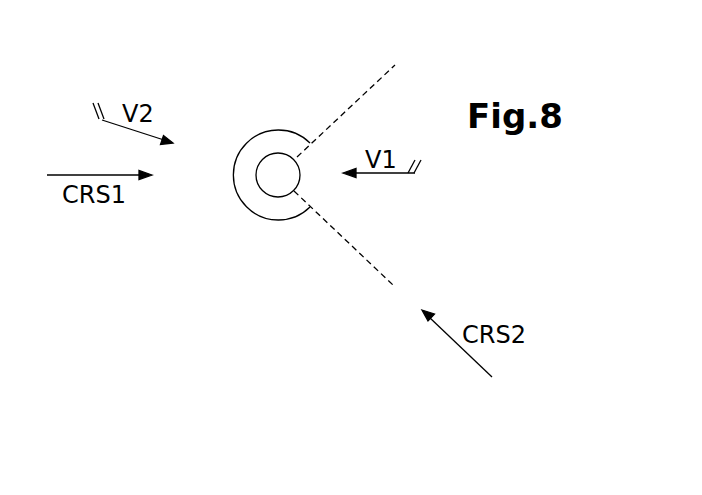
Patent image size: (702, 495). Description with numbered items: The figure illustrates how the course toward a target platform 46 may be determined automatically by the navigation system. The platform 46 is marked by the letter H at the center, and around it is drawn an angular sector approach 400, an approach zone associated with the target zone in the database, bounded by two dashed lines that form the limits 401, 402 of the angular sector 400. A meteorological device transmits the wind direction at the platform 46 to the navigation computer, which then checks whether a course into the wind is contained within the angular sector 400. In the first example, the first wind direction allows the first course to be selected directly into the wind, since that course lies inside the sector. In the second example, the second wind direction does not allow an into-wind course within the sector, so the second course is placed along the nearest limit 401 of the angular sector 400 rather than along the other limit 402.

The platform 46 is at (260, 192).
The angular sector approach 400 is at (273, 130).
The limit of the angular sector 402 is at (368, 88).
The limit of the angular sector 401 is at (367, 262).